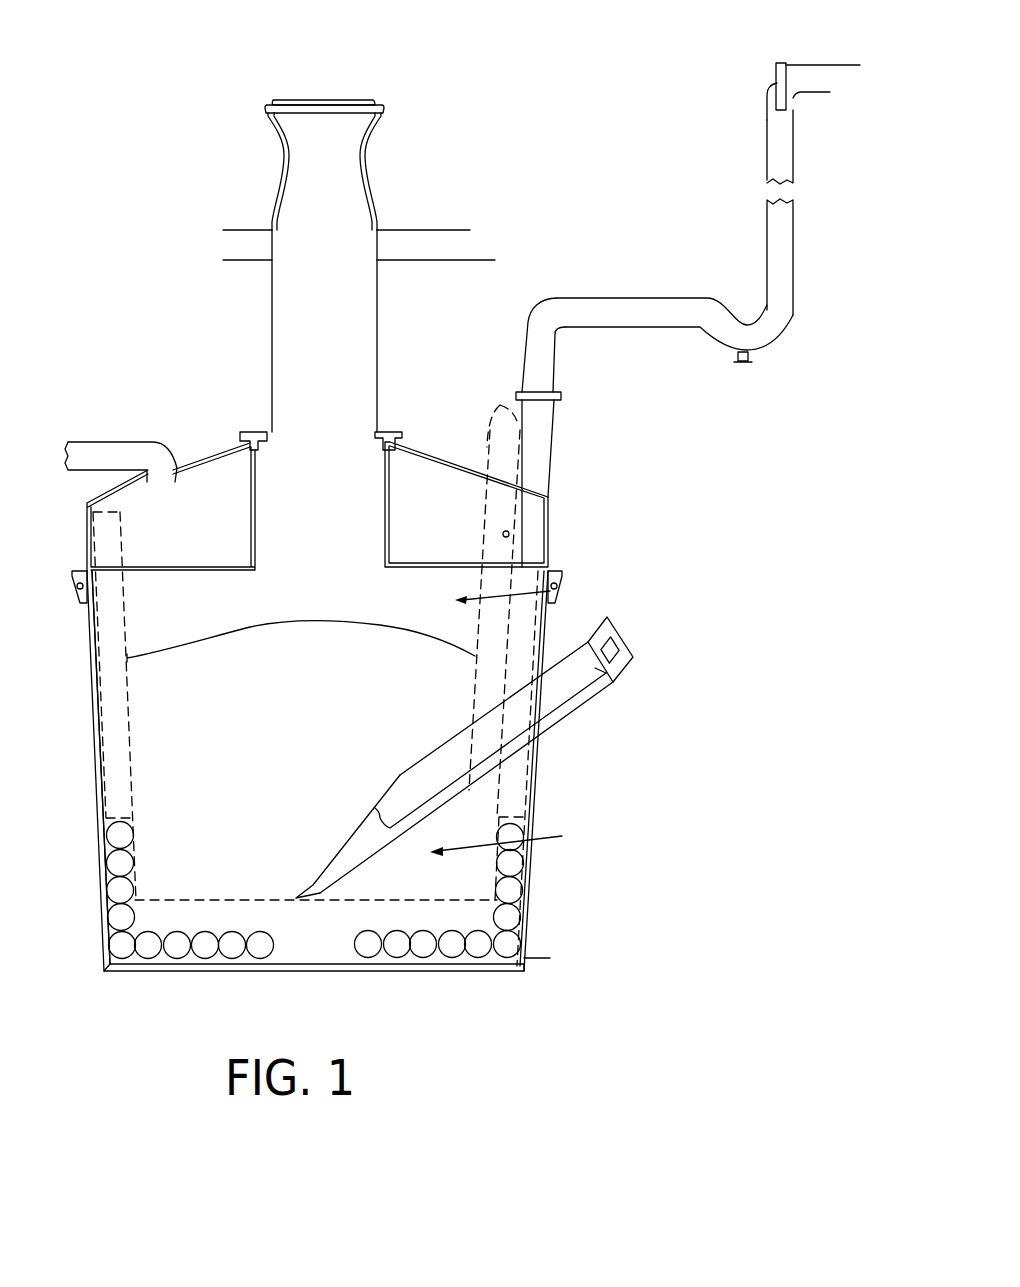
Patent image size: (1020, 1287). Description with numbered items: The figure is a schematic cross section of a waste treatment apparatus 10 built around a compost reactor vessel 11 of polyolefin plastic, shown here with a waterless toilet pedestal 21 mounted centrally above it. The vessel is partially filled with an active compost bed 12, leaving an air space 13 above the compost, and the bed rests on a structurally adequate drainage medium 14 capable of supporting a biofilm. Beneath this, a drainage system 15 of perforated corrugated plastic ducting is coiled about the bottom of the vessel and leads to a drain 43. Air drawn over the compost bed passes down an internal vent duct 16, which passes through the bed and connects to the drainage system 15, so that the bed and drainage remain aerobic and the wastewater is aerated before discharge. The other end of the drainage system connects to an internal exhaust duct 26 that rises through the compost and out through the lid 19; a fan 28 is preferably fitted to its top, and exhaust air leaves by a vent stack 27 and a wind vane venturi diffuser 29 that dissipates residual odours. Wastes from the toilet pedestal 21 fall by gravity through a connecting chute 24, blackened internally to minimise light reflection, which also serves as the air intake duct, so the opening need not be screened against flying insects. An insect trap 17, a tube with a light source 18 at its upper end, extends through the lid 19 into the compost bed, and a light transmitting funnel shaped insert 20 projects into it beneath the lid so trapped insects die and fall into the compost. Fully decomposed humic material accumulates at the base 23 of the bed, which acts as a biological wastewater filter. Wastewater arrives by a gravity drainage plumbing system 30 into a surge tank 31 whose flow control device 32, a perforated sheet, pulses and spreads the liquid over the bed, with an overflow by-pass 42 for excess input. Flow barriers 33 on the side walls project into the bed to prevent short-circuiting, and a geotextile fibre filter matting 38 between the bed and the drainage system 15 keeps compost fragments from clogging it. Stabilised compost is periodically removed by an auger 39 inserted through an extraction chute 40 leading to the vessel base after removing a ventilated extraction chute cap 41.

The waste treatment apparatus 10 is at (148, 155).
The compost reactor vessel 11 is at (537, 791).
The compost bed 12 is at (514, 837).
The air space 13 is at (552, 592).
The drainage medium 14 is at (336, 953).
The drainage system 15 is at (117, 925).
The internal vent duct 16 is at (110, 758).
The insect trap 17 is at (486, 446).
The light source 18 is at (500, 405).
The lid 19 is at (228, 440).
The funnel shaped insert 20 is at (486, 583).
The waterless toilet pedestal 21 is at (278, 93).
The base of the compost bed 23 is at (188, 898).
The connecting chute 24 is at (275, 342).
The internal exhaust duct 26 is at (522, 752).
The vent stack 27 is at (758, 218).
The fan 28 is at (562, 395).
The wind vane venturi diffuser 29 is at (770, 85).
The gravity drainage plumbing system 30 is at (100, 440).
The surge tank 31 is at (128, 505).
The flow control device 32 is at (157, 567).
The flow barriers 33 is at (104, 703).
The geotextile fibre filter matting 38 is at (281, 898).
The auger 39 is at (587, 668).
The extraction chute 40 is at (582, 633).
The extraction chute cap 41 is at (625, 642).
The overflow by-pass 42 is at (508, 533).
The drain 43 is at (524, 958).